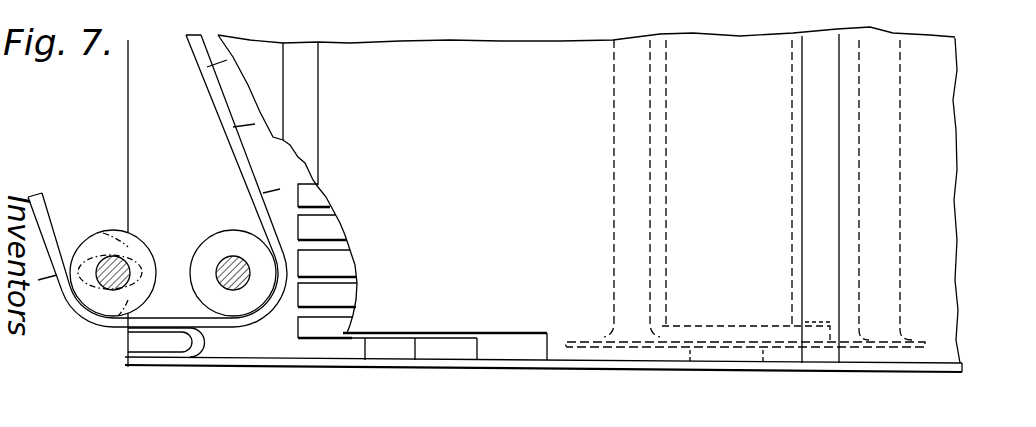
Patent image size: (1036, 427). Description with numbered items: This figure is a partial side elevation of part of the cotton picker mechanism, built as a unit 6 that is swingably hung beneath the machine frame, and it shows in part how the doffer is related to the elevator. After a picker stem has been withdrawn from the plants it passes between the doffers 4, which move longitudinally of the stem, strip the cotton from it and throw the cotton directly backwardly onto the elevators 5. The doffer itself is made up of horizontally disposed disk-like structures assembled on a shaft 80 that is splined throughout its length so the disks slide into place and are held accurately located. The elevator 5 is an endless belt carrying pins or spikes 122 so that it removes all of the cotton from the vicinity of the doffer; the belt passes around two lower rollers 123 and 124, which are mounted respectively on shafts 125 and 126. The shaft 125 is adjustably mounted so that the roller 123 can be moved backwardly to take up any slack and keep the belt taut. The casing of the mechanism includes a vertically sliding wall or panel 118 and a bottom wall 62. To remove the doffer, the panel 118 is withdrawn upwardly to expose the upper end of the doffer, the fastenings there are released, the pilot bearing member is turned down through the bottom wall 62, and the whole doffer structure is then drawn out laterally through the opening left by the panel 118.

The doffer 4 is at (257, 340).
The elevator 5 is at (207, 88).
The picker mechanism unit 6 is at (947, 45).
The bottom wall 62 is at (582, 367).
The doffer shaft 80 is at (397, 342).
The vertically sliding wall or panel 118 is at (578, 53).
The pins or spikes 122 is at (265, 192).
The lower roller 123 is at (103, 237).
The lower roller 124 is at (200, 258).
The shaft 125 is at (108, 339).
The shaft 126 is at (233, 258).